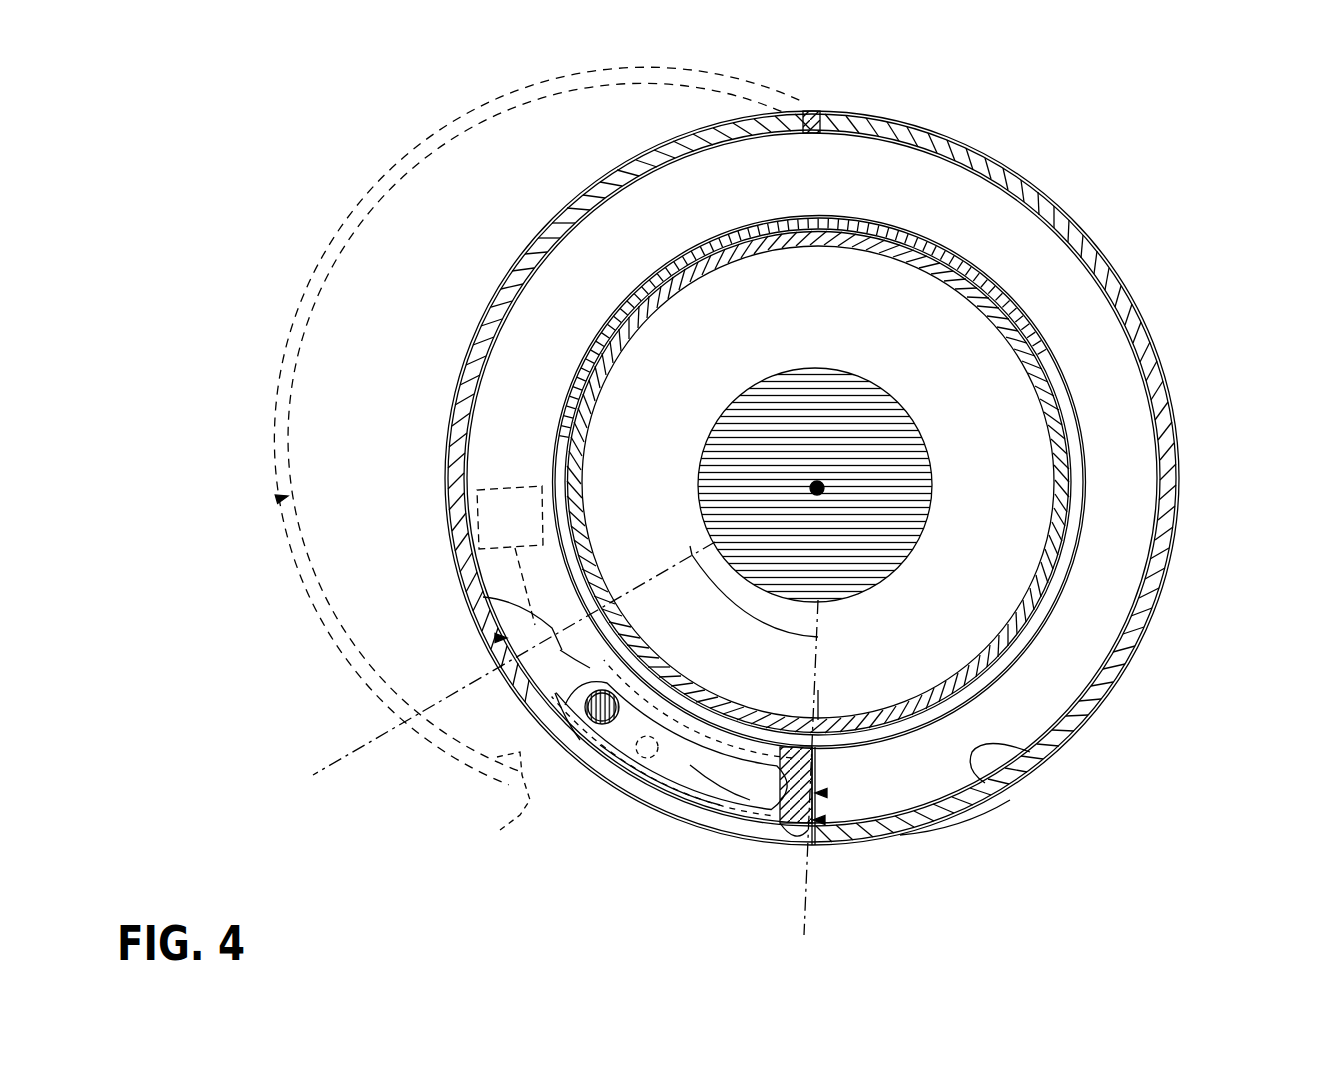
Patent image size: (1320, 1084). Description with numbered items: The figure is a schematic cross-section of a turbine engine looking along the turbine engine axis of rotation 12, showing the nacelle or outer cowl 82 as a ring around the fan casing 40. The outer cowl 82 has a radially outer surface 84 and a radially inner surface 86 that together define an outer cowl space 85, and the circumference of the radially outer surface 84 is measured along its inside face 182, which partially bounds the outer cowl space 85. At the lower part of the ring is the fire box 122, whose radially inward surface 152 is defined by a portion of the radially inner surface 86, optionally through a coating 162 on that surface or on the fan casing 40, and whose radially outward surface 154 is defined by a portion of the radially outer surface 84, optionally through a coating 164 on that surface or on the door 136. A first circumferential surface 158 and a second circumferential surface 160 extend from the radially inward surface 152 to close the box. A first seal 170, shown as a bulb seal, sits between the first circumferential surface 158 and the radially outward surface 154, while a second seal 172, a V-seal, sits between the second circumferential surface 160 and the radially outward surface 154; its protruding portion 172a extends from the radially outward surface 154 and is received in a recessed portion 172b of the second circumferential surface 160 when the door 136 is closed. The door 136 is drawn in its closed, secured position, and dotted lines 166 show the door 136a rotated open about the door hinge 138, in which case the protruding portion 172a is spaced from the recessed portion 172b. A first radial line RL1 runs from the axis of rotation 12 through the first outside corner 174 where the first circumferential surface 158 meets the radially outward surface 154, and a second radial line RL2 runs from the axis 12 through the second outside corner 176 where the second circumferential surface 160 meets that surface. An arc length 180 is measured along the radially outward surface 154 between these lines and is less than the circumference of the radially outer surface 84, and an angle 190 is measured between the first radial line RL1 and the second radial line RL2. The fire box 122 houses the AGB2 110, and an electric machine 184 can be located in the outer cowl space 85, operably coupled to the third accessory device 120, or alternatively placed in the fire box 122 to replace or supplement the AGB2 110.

The turbine engine axis of rotation 12 is at (927, 374).
The fan casing 40 is at (1062, 583).
The outer cowl 82 is at (1165, 343).
The radially outer surface 84 is at (1182, 460).
The outer cowl space 85 is at (1067, 683).
The radially inner surface 86 is at (1078, 548).
The AGB2 110 is at (720, 765).
The third accessory device 120 is at (585, 712).
The fire box 122 is at (822, 793).
The door 136 is at (443, 447).
The door in open position 136a is at (310, 598).
The door hinge 138 is at (812, 112).
The radially inward surface 152 is at (822, 706).
The radially outward surface 154 is at (635, 775).
The first circumferential surface 158 is at (500, 598).
The second circumferential surface 160 is at (957, 813).
The coating 162 is at (688, 770).
The coating 164 is at (607, 770).
The dotted lines 166 is at (280, 498).
The first seal 170 is at (497, 637).
The second seal 172 is at (820, 820).
The protruding portion 172a is at (520, 815).
The recessed portion 172b is at (765, 800).
The first outside corner 174 is at (590, 618).
The second outside corner 176 is at (808, 835).
The arc length 180 is at (572, 758).
The inside face 182 is at (1030, 752).
The electric machine 184 is at (477, 517).
The angle 190 is at (752, 612).
The first radial line RL1 is at (365, 760).
The second radial line RL2 is at (808, 890).